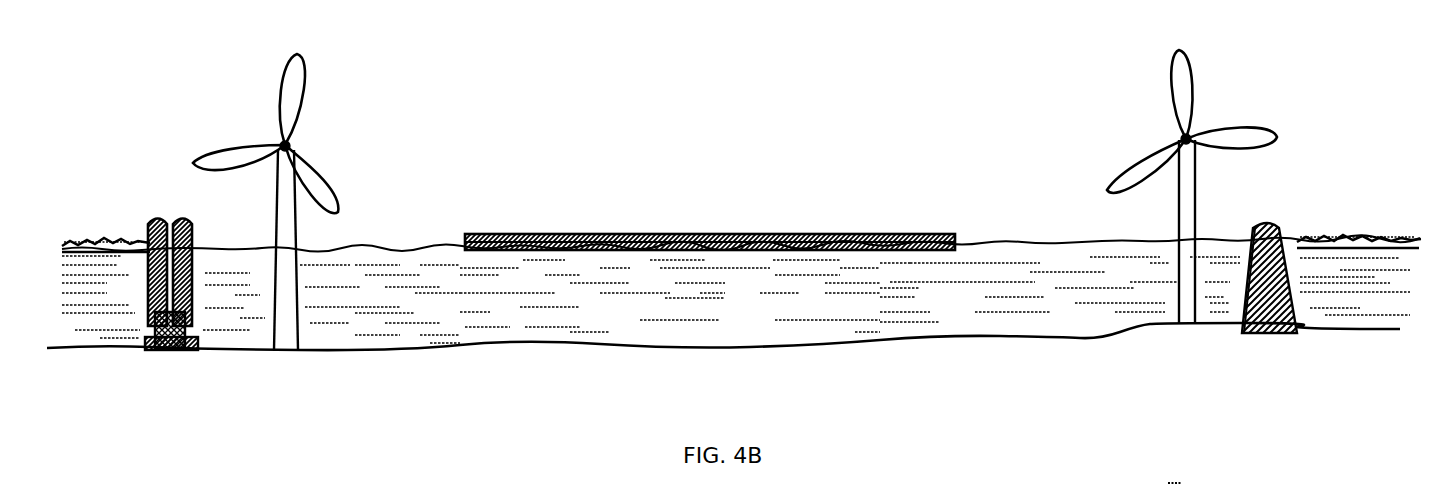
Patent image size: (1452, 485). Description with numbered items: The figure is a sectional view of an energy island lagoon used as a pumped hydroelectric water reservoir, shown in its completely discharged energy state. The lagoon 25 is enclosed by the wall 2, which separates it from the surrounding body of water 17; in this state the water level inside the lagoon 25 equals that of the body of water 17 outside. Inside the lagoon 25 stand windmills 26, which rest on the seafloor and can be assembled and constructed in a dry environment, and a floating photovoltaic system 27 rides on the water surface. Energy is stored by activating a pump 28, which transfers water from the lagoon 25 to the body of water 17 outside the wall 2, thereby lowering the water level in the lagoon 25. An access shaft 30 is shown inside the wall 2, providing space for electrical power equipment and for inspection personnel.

The wall 2 is at (148, 294).
The body of water 17 is at (98, 266).
The lagoon 25 is at (741, 289).
The windmills 26 is at (319, 153).
The floating photovoltaic system 27 is at (663, 235).
The pump 28 is at (167, 350).
The access shaft 30 is at (173, 242).